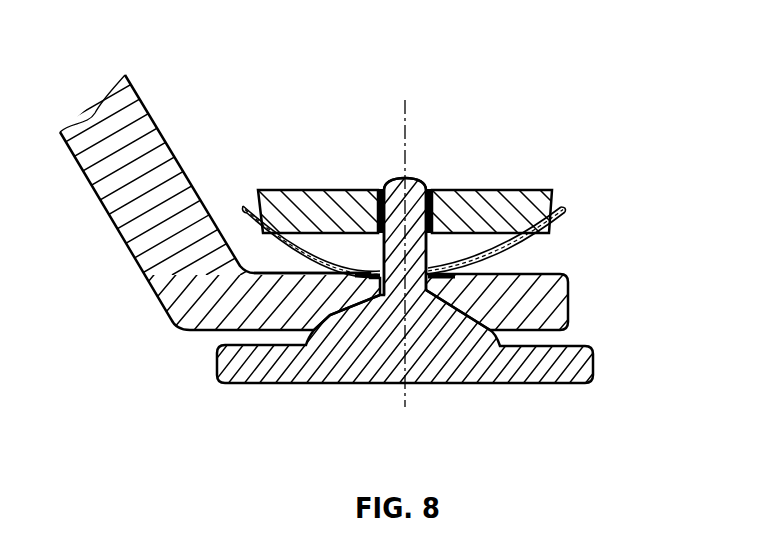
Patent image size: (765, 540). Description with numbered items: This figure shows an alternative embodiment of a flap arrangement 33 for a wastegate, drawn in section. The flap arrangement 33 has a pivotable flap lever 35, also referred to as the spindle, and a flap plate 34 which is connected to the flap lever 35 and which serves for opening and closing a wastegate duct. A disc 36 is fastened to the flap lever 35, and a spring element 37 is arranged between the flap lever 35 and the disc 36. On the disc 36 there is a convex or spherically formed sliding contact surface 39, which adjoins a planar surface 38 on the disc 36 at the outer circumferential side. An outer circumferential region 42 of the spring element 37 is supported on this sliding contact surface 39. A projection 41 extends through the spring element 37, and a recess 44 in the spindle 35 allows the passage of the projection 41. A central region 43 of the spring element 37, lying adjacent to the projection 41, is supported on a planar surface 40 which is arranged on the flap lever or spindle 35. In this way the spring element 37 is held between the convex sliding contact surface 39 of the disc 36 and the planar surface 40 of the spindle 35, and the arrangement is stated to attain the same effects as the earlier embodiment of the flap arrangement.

The flap arrangement 33 is at (253, 67).
The flap plate 34 is at (280, 370).
The flap lever 35 is at (165, 280).
The disc 36 is at (510, 207).
The spring element 37 is at (522, 265).
The planar surface of the disc 38 is at (505, 252).
The sliding contact surface 39 is at (546, 218).
The planar surface of the spindle 40 is at (312, 266).
The projection 41 is at (433, 278).
The outer circumferential region of the spring element 42 is at (560, 218).
The central region of the spring element 43 is at (364, 270).
The recess in the spindle 44 is at (437, 288).